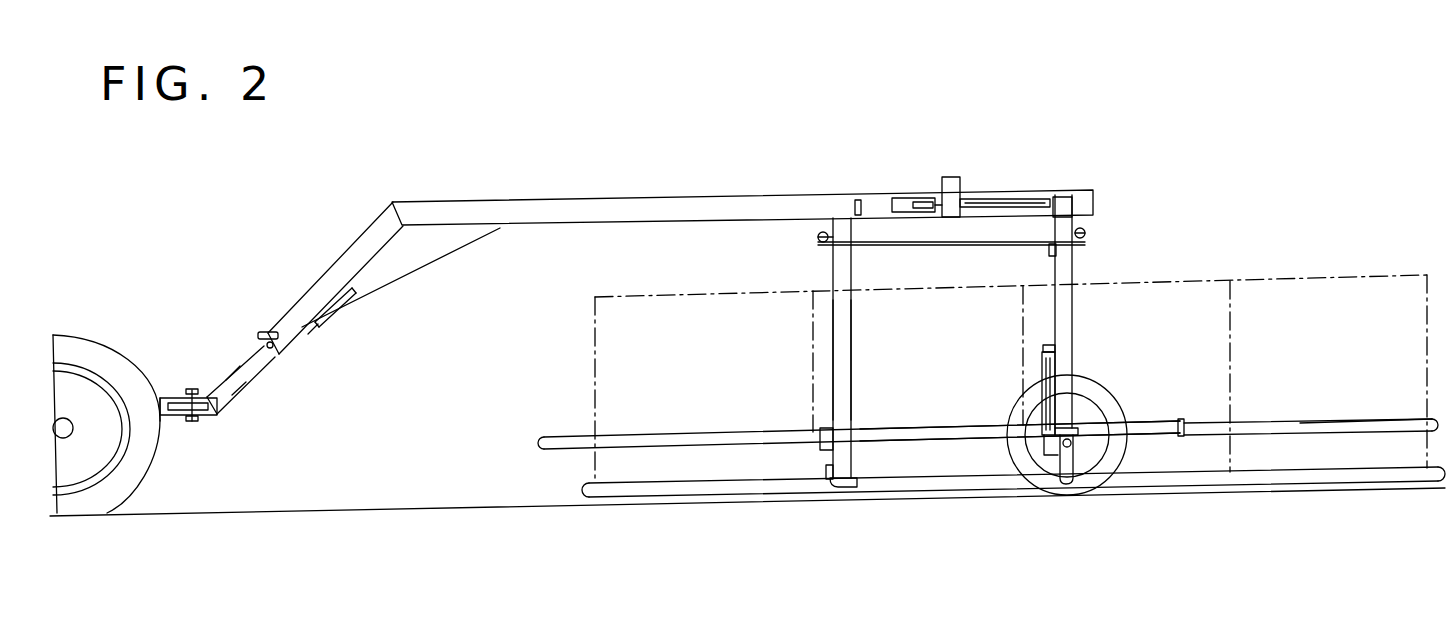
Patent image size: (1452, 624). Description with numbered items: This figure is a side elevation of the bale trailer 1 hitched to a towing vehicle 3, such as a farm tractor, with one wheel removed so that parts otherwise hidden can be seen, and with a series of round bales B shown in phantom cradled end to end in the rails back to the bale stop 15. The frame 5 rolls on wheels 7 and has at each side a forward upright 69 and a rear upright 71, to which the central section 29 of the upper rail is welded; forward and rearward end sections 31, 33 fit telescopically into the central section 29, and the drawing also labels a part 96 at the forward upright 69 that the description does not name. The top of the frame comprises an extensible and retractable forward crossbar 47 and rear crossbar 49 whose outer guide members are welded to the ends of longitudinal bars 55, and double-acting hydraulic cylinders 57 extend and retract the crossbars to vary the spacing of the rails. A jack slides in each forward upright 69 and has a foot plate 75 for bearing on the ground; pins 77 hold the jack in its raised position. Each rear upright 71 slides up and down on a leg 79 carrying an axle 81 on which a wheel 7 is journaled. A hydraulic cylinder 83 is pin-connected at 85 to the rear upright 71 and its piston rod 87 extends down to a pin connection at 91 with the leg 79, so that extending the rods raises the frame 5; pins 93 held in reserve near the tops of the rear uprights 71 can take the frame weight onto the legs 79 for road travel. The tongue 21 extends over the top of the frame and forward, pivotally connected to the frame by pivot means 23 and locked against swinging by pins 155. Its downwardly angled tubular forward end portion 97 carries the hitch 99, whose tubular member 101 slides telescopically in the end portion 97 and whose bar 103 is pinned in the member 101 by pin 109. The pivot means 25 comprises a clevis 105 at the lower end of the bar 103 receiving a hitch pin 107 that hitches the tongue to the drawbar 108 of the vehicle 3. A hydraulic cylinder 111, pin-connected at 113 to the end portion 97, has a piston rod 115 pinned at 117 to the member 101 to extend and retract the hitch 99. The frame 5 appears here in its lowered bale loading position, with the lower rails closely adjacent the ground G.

The trailer 1 is at (1111, 193).
The towing vehicle 3 is at (107, 320).
The frame 5 is at (829, 316).
The wheels 7 is at (1130, 418).
The bale stop 15 is at (1433, 404).
The tongue 21 is at (557, 195).
The pivot means 23 is at (953, 174).
The pivot means 25 is at (221, 427).
The central section 29 is at (923, 398).
The forward end section 31 is at (637, 441).
The rearward end section 33 is at (1323, 393).
The forward crossbar 47 is at (837, 250).
The rear crossbar 49 is at (1075, 250).
The longitudinal bars 55 is at (957, 228).
The double-acting hydraulic cylinders 57 is at (819, 238).
The forward upright 69 is at (843, 368).
The rear upright 71 is at (1066, 353).
The foot plates 75 is at (857, 482).
The pins 77 is at (827, 472).
The legs 79 is at (1066, 486).
The axles 81 is at (1074, 460).
The hydraulic cylinders 83 is at (1043, 367).
The pin connection 85 is at (1050, 338).
The piston rod 87 is at (1050, 447).
The pin connection 91 is at (1053, 463).
The pins 93 is at (1050, 249).
The sleeve 96 is at (706, 426).
The forward end portion 97 is at (338, 259).
The hitch 99 is at (223, 366).
The tubular member 101 is at (266, 332).
The bar 103 is at (238, 390).
The clevis 105 is at (183, 397).
The hitch pin 107 is at (203, 427).
The drawbar 108 is at (167, 416).
The pin 109 is at (277, 356).
The hydraulic cylinder 111 is at (346, 301).
The pin connection 113 is at (383, 258).
The piston rod 115 is at (309, 335).
The pin connection 117 is at (284, 360).
The pins 155 is at (853, 212).
The round bales B is at (598, 297).
The ground G is at (394, 513).